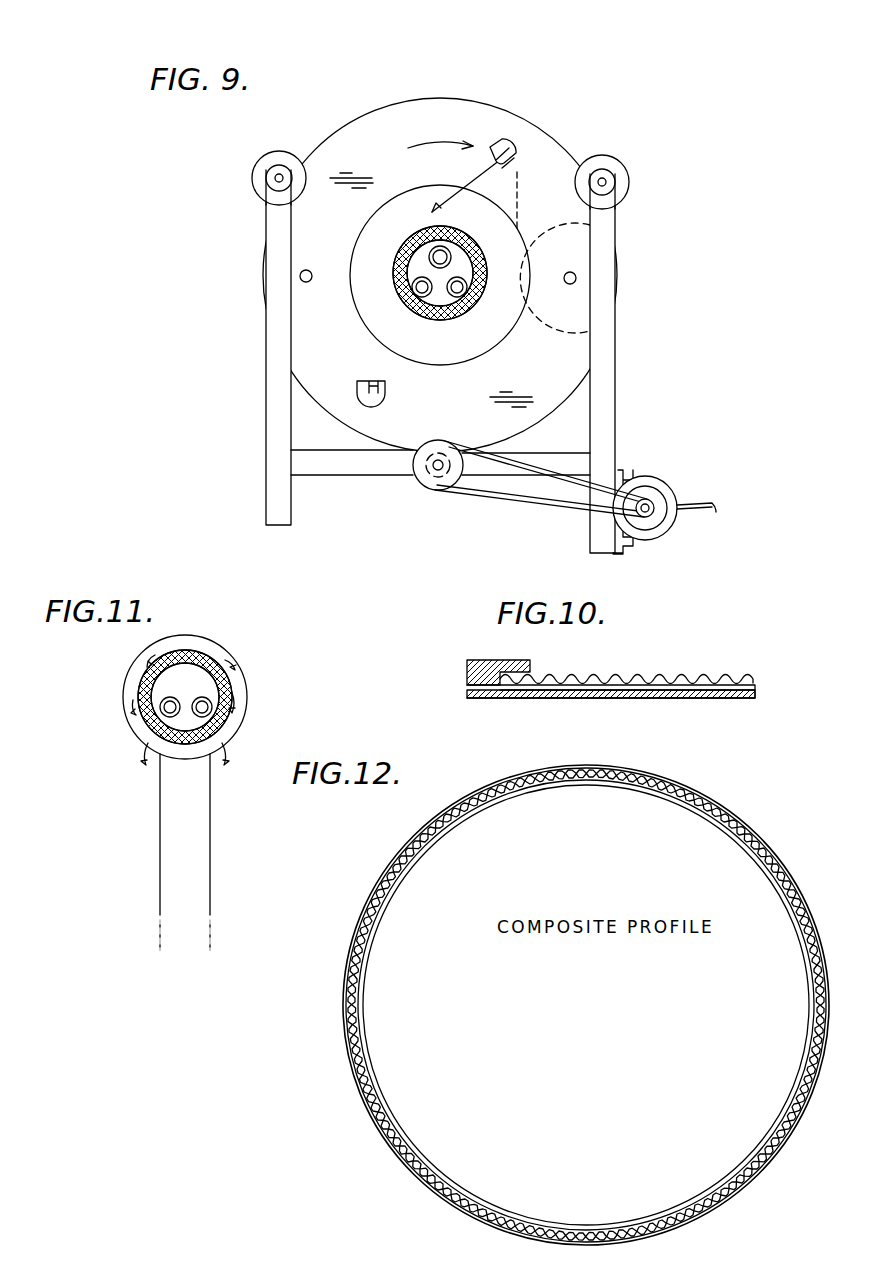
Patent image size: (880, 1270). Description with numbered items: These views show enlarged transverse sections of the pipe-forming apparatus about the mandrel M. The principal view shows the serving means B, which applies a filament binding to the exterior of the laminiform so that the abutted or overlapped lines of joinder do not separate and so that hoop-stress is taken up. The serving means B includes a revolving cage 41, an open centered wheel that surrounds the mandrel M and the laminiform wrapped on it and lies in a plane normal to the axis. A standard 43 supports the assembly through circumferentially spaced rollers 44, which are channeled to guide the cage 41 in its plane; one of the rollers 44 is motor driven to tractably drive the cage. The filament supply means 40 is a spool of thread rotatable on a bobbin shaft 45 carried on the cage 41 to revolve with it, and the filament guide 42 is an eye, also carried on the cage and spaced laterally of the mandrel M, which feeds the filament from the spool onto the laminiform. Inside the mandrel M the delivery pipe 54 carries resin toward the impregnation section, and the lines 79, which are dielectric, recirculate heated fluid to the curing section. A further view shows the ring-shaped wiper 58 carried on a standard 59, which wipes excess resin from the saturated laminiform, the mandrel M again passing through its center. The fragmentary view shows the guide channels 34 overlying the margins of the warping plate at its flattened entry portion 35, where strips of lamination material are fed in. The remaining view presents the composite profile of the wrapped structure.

In FIG. 9, the filament supply means 40 is at (634, 292).
In FIG. 9, the revolving cage 41 is at (517, 124).
In FIG. 9, the filament guide 42 is at (513, 150).
In FIG. 9, the standard 43 is at (270, 428).
In FIG. 9, the rollers 44 is at (266, 176).
In FIG. 9, the bobbin shaft 45 is at (566, 284).
In FIG. 9, the delivery pipe 54 is at (470, 249).
In FIG. 9, the lines 79 is at (414, 308).
In FIG. 11, the lines 79 is at (215, 712).
In FIG. 11, the ring-shaped wiper 58 is at (246, 681).
In FIG. 11, the standard 59 is at (215, 840).
In FIG. 10, the guide channels 34 is at (525, 676).
In FIG. 10, the entry portion 35 is at (625, 700).
In FIG. 9, the serving means B is at (300, 133).
In FIG. 9, the mandrel M is at (450, 318).
In FIG. 11, the mandrel M is at (143, 714).